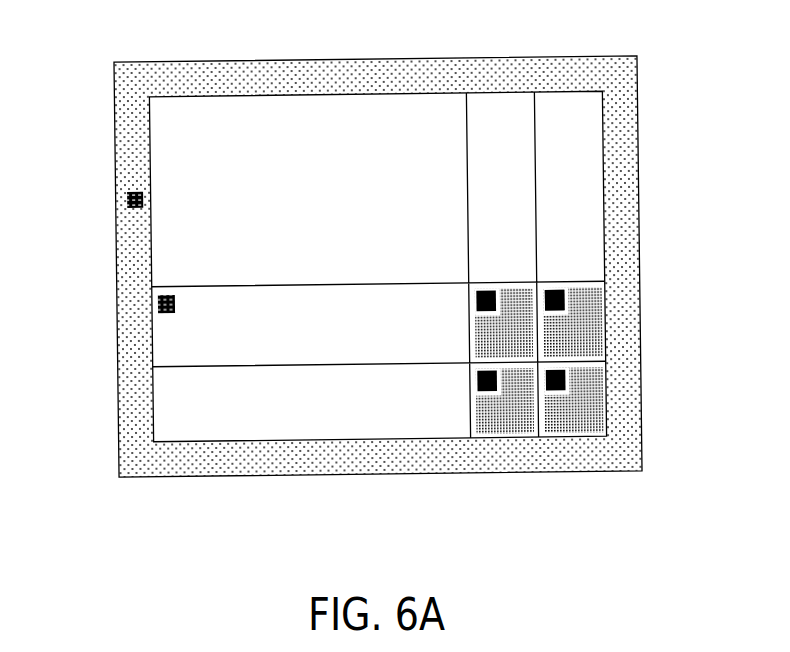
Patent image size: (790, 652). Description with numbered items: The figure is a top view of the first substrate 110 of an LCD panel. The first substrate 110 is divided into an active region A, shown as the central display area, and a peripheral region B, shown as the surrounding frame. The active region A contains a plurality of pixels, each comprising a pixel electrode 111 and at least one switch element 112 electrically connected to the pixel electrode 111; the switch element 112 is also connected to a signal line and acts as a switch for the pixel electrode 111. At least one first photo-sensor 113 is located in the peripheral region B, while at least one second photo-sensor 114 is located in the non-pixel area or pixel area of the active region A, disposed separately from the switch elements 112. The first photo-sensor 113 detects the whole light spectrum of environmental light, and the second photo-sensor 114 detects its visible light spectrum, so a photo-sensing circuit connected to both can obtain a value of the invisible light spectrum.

The first substrate 110 is at (638, 113).
The pixel electrode 111 is at (593, 412).
The switch element 112 is at (560, 290).
The first photo-sensor 113 is at (130, 191).
The second photo-sensor 114 is at (160, 312).